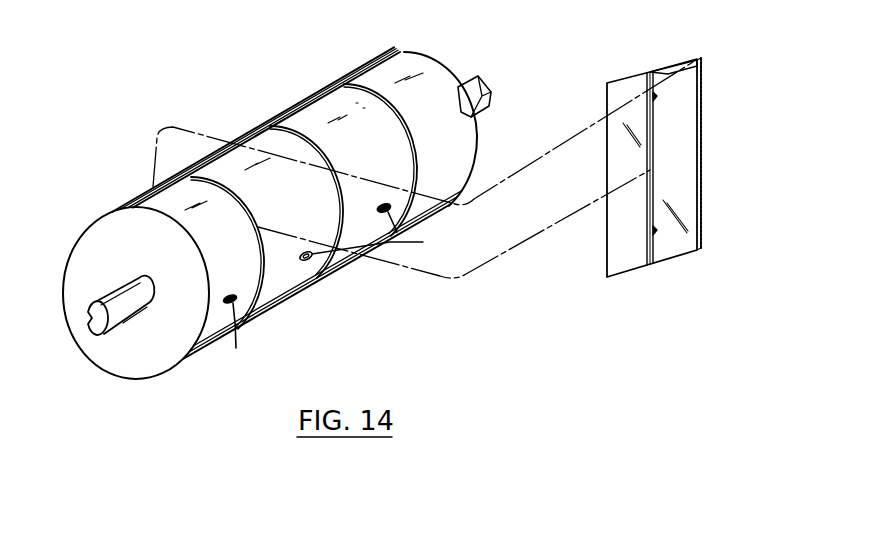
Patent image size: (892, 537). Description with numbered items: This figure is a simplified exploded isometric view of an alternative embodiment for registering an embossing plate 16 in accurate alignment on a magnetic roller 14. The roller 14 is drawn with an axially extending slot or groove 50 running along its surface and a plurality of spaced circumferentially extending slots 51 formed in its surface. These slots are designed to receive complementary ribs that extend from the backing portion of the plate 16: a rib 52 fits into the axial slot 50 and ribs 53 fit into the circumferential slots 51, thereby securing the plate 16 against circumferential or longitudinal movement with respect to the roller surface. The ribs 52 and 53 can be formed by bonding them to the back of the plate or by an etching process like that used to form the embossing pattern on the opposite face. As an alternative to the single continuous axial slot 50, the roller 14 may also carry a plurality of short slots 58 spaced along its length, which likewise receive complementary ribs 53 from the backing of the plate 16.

The magnetic roller 14 is at (132, 363).
The axially extending slot 50 is at (296, 108).
The circumferentially extending slots 51 is at (400, 117).
The short slots 58 is at (397, 231).
The embossing plate 16 is at (698, 157).
The rib 52 is at (650, 243).
The ribs 53 is at (680, 67).